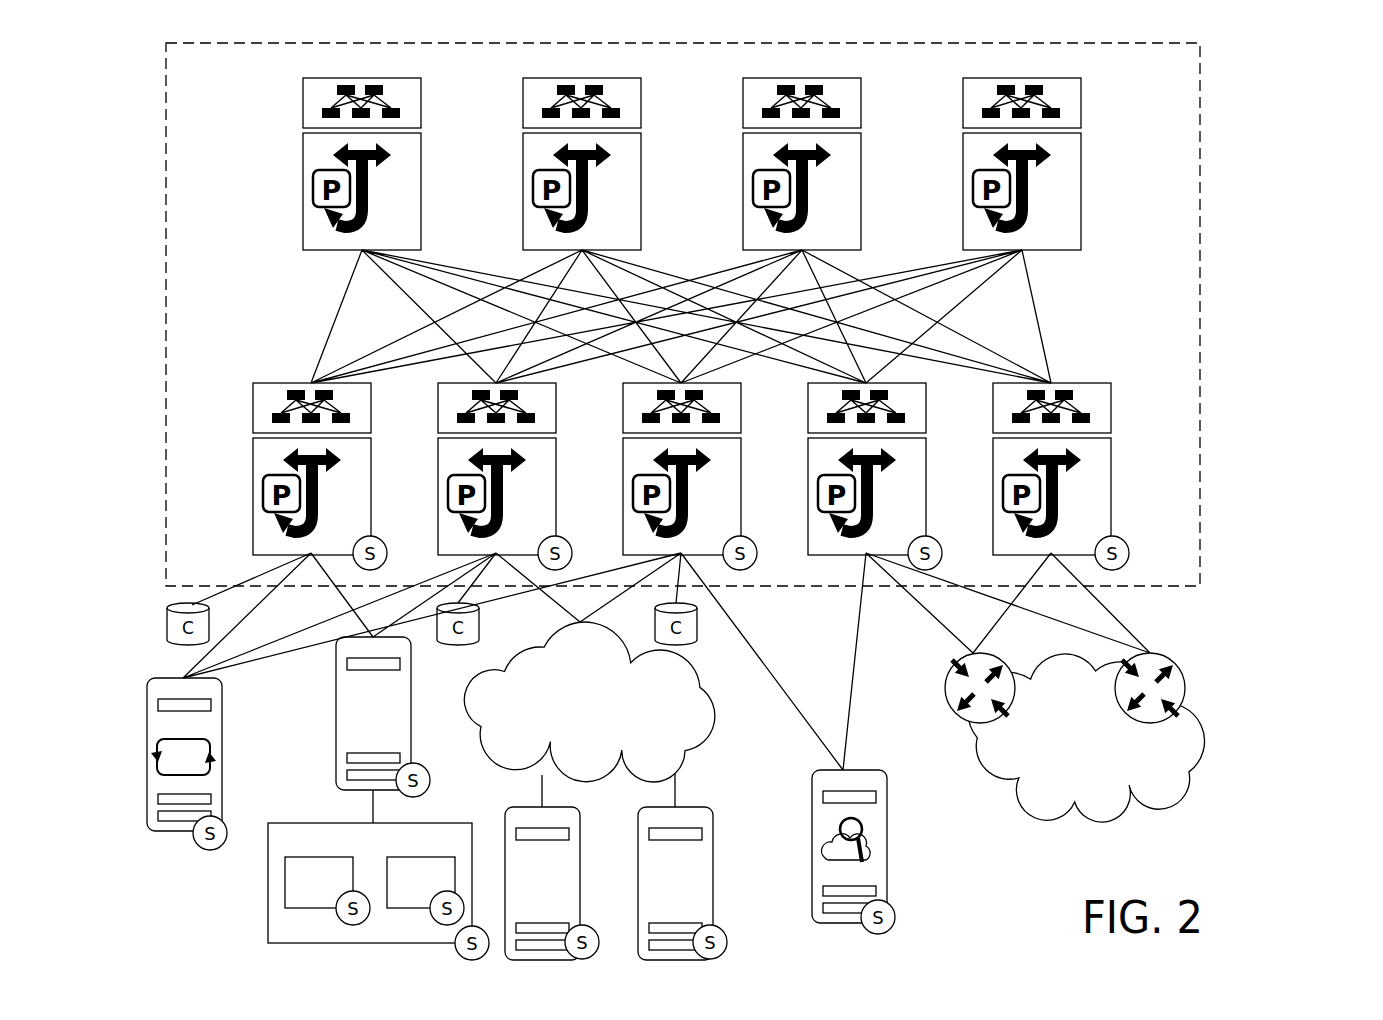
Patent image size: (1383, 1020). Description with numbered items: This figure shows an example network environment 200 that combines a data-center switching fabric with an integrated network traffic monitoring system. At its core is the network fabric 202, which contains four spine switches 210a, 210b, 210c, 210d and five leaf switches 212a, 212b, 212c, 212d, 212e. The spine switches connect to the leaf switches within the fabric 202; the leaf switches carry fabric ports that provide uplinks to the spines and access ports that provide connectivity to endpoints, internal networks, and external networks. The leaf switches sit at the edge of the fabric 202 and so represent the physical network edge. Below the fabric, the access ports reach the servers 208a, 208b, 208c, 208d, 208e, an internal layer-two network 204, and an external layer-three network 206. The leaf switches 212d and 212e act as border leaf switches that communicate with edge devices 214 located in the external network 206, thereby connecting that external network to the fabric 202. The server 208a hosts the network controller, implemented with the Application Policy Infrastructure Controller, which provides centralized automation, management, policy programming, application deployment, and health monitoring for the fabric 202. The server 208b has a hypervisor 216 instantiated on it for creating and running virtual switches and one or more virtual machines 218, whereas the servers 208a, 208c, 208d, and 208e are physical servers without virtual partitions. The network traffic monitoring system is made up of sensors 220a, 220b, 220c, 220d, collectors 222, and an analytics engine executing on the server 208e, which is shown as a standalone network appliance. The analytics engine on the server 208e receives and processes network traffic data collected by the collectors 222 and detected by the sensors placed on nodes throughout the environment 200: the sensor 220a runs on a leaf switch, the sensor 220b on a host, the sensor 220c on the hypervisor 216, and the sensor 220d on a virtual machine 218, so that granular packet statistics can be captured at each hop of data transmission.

The network environment 200 is at (1303, 182).
The network fabric 202 is at (1200, 320).
The Layer 2 network 204 is at (589, 702).
The Layer 3 network 206 is at (1086, 738).
The server 208a is at (147, 755).
The server 208b is at (336, 713).
The server 208c is at (580, 857).
The server 208d is at (713, 857).
The server 208e is at (885, 848).
The spine switch 210a is at (303, 182).
The spine switch 210b is at (523, 182).
The spine switch 210c is at (743, 182).
The spine switch 210d is at (963, 182).
The leaf switch 212a is at (253, 490).
The leaf switch 212b is at (438, 490).
The leaf switch 212c is at (623, 490).
The leaf switch 212d is at (808, 490).
The leaf switch 212e is at (993, 490).
The edge devices 214 is at (1187, 643).
The hypervisor 216 is at (320, 848).
The virtual machine 218 is at (285, 893).
The sensor 220a is at (1130, 553).
The sensor 220b is at (433, 768).
The sensor 220c is at (480, 928).
The sensor 220d is at (337, 922).
The collectors 222 is at (166, 607).